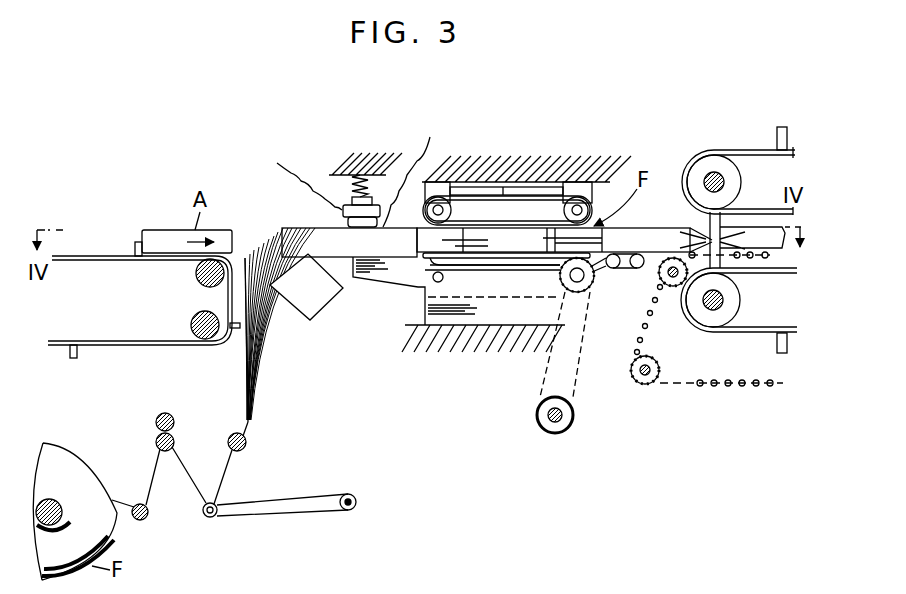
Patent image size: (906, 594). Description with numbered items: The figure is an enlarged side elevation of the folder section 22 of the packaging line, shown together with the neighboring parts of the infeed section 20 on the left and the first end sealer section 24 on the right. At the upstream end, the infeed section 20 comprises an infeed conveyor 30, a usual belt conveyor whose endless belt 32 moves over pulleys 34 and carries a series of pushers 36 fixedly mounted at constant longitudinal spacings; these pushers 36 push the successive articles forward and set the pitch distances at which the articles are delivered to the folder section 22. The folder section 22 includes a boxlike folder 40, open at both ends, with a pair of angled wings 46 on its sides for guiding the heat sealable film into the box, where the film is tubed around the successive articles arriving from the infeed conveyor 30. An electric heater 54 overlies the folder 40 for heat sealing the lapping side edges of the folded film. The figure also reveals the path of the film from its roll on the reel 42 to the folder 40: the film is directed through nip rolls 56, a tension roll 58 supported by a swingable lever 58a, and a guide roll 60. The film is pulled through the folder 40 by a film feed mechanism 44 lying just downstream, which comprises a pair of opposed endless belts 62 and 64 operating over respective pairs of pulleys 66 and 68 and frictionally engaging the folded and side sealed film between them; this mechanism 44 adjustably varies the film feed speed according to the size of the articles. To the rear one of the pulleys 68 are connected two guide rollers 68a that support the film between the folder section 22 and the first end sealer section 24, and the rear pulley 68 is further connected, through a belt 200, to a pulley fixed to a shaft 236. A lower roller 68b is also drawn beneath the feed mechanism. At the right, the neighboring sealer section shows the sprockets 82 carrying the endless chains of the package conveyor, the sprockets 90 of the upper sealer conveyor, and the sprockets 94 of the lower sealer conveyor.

The infeed section 20 is at (82, 232).
The folder section 22 is at (368, 141).
The first end sealer section 24 is at (737, 135).
The infeed conveyor 30 is at (75, 264).
The endless belt 32 is at (100, 256).
The pulleys 34 is at (196, 316).
The pushers 36 is at (138, 242).
The folder 40 is at (418, 183).
The reel 42 is at (52, 500).
The film feed mechanism 44 is at (600, 201).
The angled wings 46 is at (327, 305).
The electric heater 54 is at (342, 220).
The nip rolls 56 is at (165, 452).
The tension roll 58 is at (212, 518).
The swingable lever 58a is at (306, 510).
The guide roll 60 is at (247, 442).
The endless belt 62 is at (503, 190).
The endless belt 64 is at (492, 306).
The pulleys 66 is at (452, 214).
The pulleys 68 is at (445, 282).
The guide rollers 68a is at (619, 278).
The lower roller 68b is at (568, 427).
The sprockets 82 is at (672, 288).
The sprockets 90 is at (701, 170).
The sprockets 94 is at (716, 322).
The belt 200 is at (578, 370).
The shaft 236 is at (547, 417).